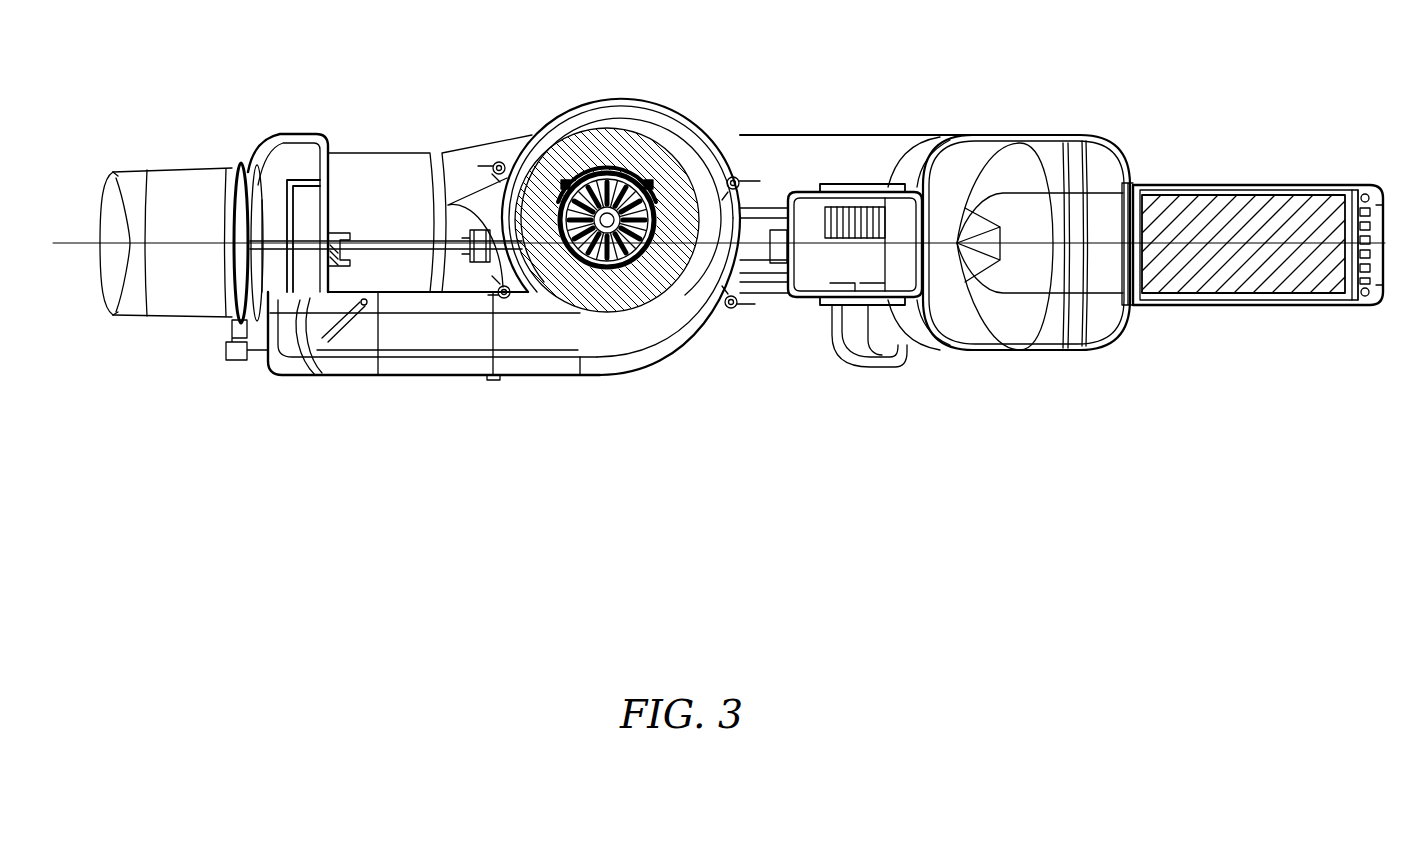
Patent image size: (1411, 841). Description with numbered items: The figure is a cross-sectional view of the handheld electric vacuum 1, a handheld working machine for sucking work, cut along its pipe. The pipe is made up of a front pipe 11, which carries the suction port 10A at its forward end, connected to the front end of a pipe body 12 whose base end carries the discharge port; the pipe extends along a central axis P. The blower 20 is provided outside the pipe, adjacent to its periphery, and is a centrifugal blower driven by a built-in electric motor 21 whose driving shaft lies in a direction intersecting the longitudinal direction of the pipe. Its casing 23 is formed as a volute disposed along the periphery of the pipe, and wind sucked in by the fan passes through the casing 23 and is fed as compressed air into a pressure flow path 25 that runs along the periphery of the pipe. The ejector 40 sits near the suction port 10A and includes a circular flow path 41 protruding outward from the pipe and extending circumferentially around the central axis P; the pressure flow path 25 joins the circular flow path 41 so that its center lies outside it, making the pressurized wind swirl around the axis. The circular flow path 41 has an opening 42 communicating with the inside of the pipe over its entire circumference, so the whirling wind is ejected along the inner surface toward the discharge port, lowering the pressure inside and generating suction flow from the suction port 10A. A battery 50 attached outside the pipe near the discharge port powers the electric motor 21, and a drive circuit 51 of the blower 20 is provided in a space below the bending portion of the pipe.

The handheld electric vacuum 1 is at (1180, 92).
The central axis P is at (55, 242).
The suction port 10A is at (100, 312).
The front pipe 11 is at (172, 170).
The pipe body 12 is at (812, 136).
The blower 20 is at (603, 92).
The electric motor 21 is at (604, 268).
The casing 23 is at (652, 103).
The pressure flow path 25 is at (434, 366).
The ejector 40 is at (288, 122).
The circular flow path 41 is at (304, 152).
The opening 42 is at (320, 222).
The battery 50 is at (1228, 183).
The drive circuit 51 is at (800, 300).